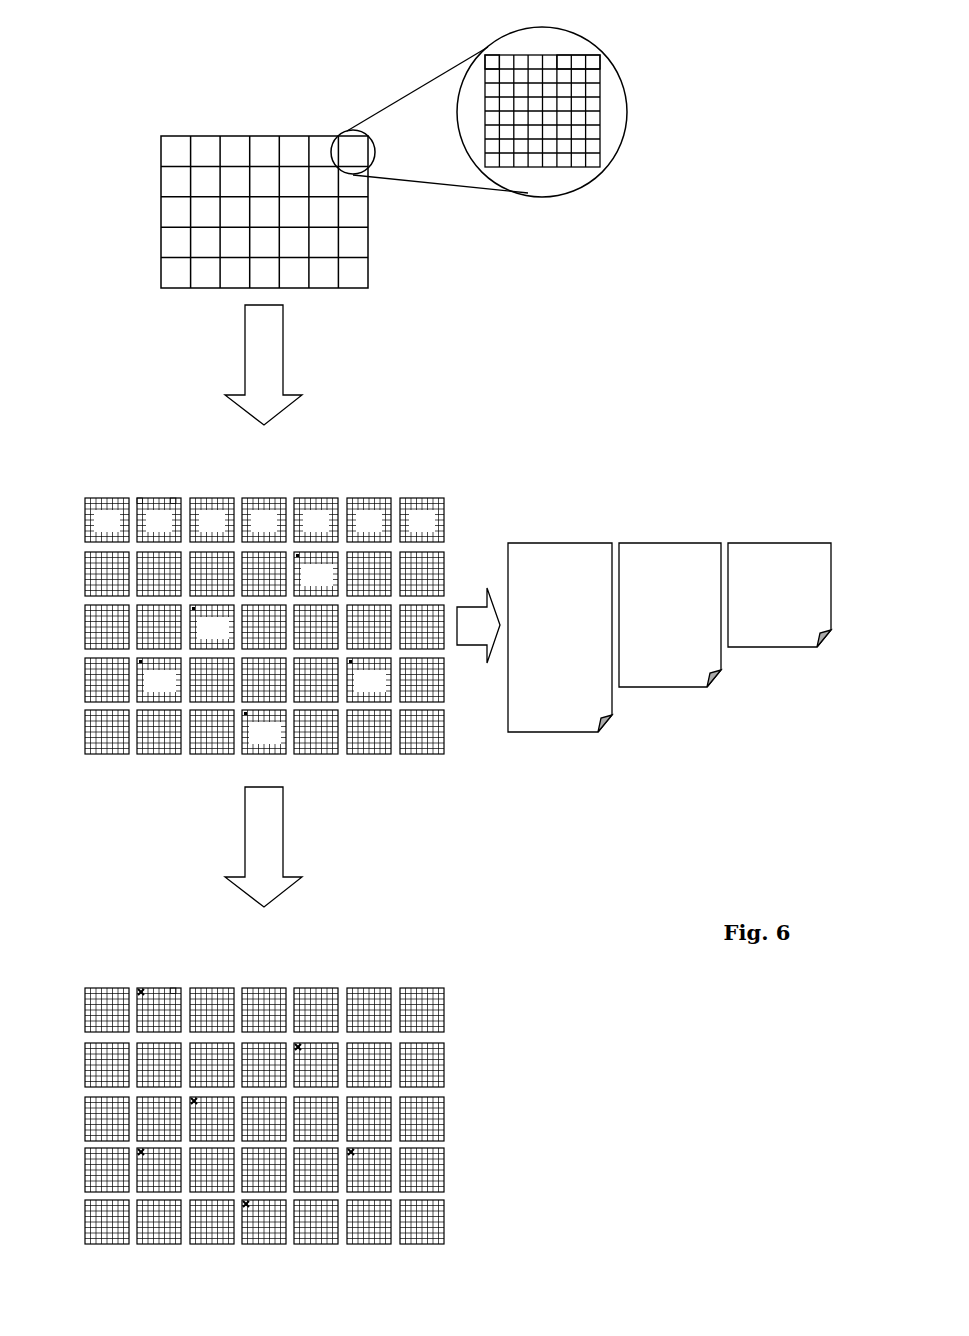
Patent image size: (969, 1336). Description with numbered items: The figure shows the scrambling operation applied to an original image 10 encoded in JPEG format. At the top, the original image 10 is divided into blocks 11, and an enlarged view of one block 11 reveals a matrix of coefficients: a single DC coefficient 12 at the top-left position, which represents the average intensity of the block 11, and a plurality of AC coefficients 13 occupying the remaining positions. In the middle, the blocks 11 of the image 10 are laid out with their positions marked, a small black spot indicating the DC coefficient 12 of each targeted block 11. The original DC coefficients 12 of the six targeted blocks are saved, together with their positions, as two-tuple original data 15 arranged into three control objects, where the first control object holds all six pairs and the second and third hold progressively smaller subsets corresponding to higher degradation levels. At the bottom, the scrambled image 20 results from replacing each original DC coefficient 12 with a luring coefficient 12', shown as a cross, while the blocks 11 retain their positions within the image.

The original image 10 is at (263, 115).
The block 11 is at (350, 145).
The DC coefficient 12 is at (317, 252).
The AC coefficients 13 is at (592, 60).
The original data 15 is at (563, 716).
The transformed image 20 is at (70, 1023).
The luring coefficient 12' is at (143, 948).